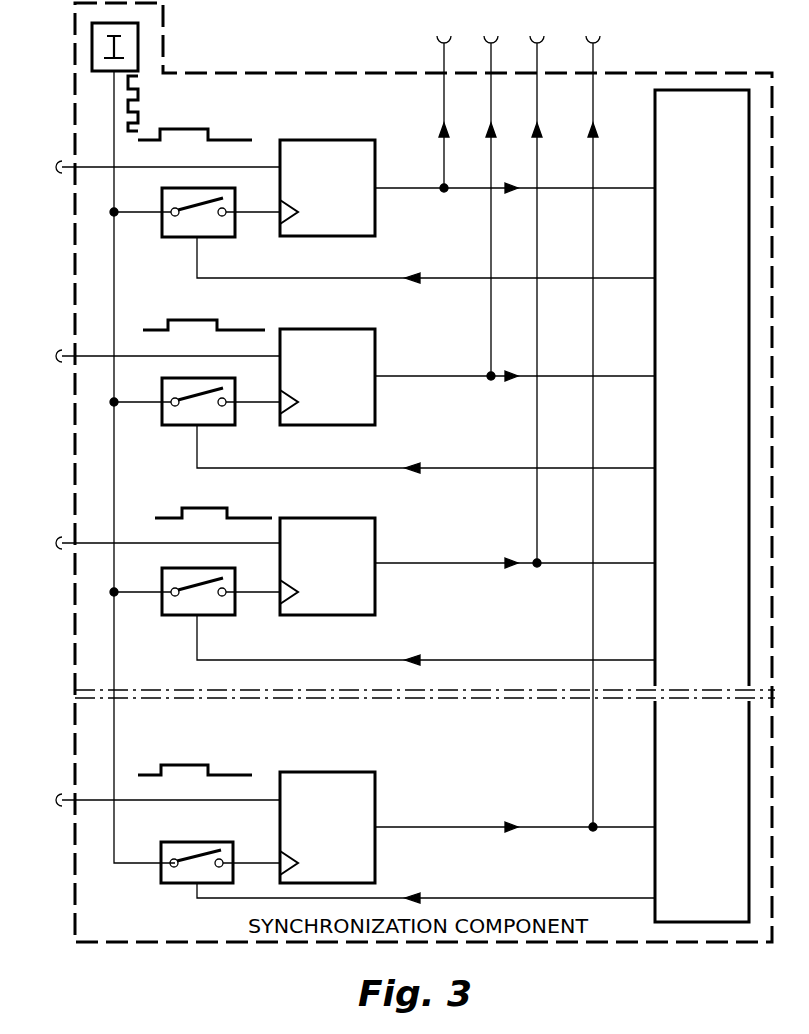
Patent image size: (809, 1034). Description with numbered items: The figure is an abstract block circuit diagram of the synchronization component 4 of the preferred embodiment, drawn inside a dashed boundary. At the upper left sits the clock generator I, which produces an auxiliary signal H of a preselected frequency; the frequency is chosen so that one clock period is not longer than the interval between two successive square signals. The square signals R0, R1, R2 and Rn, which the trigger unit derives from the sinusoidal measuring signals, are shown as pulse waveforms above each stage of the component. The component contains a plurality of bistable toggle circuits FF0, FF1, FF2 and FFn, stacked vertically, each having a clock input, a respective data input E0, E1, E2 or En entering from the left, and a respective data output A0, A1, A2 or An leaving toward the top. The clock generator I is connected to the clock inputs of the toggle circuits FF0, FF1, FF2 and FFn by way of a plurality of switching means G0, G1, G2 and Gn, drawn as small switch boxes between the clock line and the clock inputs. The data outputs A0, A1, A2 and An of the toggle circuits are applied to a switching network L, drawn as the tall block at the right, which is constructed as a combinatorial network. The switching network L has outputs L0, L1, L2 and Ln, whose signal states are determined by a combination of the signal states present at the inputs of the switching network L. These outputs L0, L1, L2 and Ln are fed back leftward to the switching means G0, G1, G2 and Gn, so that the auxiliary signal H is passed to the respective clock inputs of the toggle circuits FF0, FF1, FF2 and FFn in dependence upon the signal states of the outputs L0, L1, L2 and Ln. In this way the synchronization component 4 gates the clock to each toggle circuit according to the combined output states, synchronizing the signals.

The synchronization component 4 is at (609, 946).
The clock generator I is at (115, 47).
The auxiliary signal H is at (138, 105).
The square signal R0 is at (188, 128).
The square signal R1 is at (205, 320).
The square signal R2 is at (218, 508).
The square signal Rn is at (207, 763).
The switching means G0 is at (178, 228).
The switching means G1 is at (175, 415).
The switching means G2 is at (182, 607).
The switching means Gn is at (170, 877).
The bistable toggle circuit FF0 is at (467, 188).
The bistable toggle circuit FF1 is at (467, 377).
The bistable toggle circuit FF2 is at (467, 566).
The bistable toggle circuit FFn is at (467, 827).
The data input E0 is at (155, 150).
The data input E1 is at (155, 340).
The data input E2 is at (155, 527).
The data input En is at (155, 783).
The data output A0 is at (444, 100).
The data output A1 is at (491, 194).
The data output A2 is at (537, 287).
The data output An is at (593, 419).
The output of switching network L0 is at (432, 276).
The output of switching network L1 is at (443, 467).
The output of switching network L2 is at (441, 659).
The output of switching network Ln is at (446, 897).
The switching network L is at (688, 473).